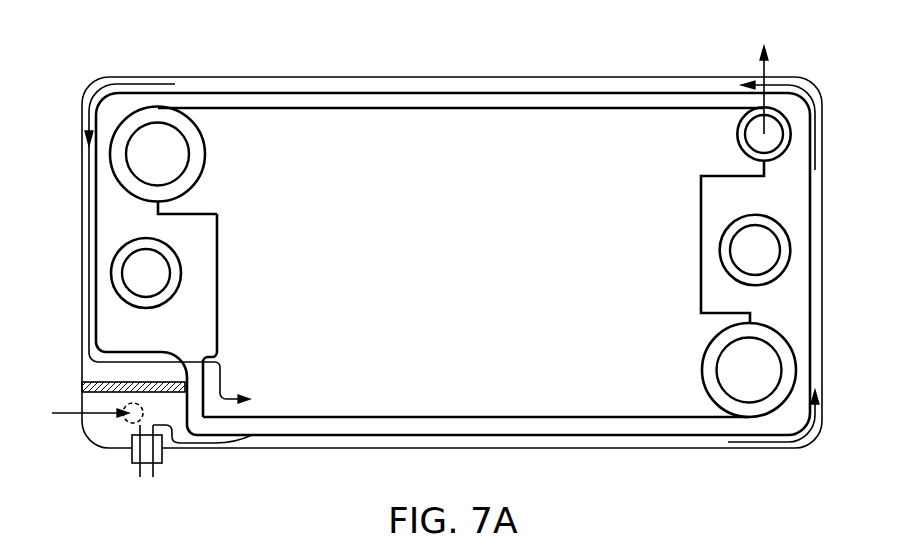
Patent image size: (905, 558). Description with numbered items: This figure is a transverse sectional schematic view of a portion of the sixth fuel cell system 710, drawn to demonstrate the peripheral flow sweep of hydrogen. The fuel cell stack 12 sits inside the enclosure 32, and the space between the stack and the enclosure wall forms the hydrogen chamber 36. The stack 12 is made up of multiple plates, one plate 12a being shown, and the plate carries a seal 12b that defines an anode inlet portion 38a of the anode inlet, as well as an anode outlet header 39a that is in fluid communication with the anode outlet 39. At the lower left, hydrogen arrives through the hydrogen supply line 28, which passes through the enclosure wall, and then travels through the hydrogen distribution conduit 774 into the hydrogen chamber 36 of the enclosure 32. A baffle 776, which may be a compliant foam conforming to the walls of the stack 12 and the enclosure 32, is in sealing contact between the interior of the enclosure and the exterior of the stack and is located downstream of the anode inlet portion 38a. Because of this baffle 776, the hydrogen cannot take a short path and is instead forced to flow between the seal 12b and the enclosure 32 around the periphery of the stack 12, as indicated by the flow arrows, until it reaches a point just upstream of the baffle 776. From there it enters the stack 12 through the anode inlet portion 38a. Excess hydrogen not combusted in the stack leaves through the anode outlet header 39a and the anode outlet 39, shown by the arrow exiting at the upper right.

The sixth fuel cell system 710 is at (208, 56).
The enclosure 32 is at (293, 77).
The hydrogen chamber 36 is at (517, 87).
The anode outlet 39 is at (760, 63).
The anode outlet header 39a is at (773, 139).
The fuel cell stack 12 is at (811, 255).
The plate 12a is at (472, 254).
The seal 12b is at (590, 417).
The anode inlet portion 38a is at (202, 358).
The baffle 776 is at (84, 383).
The hydrogen supply line 28 is at (70, 413).
The hydrogen distribution conduit 774 is at (126, 421).